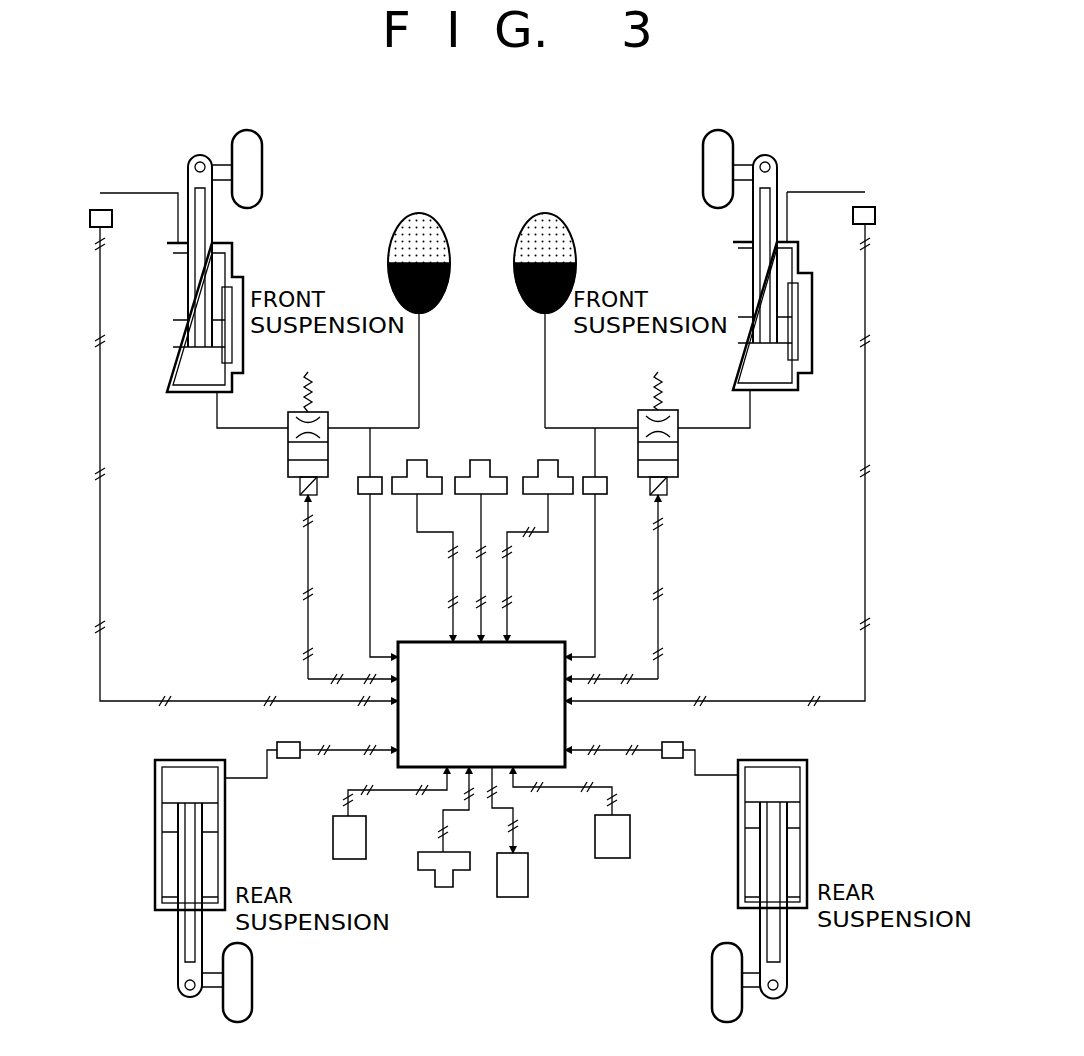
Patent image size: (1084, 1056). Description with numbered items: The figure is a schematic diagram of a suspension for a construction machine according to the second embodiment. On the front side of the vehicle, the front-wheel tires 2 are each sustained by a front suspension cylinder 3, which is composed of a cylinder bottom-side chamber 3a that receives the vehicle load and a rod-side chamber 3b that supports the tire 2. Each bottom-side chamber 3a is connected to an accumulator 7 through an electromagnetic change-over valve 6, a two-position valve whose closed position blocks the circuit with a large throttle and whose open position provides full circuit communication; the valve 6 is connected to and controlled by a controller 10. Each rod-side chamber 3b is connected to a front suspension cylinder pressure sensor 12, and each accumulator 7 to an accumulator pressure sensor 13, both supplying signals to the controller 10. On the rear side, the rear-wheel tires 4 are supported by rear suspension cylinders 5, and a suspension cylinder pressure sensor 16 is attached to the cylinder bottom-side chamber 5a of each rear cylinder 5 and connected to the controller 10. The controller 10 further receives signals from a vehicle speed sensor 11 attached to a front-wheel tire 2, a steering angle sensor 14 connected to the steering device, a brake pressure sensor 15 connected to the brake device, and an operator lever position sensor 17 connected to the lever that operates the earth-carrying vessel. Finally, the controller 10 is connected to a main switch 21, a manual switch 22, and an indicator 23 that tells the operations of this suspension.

The front-wheel tire 2 is at (247, 137).
The front suspension cylinder 3 is at (233, 257).
The cylinder bottom-side chamber 3a is at (193, 375).
The rod-side chamber 3b is at (180, 272).
The rear-wheel tire 4 is at (252, 983).
The rear suspension cylinder 5 is at (225, 858).
The cylinder bottom-side chamber 5a is at (170, 787).
The electromagnetic change-over valve 6 is at (298, 483).
The accumulator 7 is at (418, 214).
The controller 10 is at (538, 640).
The vehicle speed sensor 11 is at (497, 477).
The front suspension cylinder pressure sensor 12 is at (98, 208).
The accumulator pressure sensor 13 is at (378, 497).
The steering angle sensor 14 is at (437, 477).
The brake pressure sensor 15 is at (558, 497).
The suspension cylinder pressure sensor 16 is at (277, 745).
The operator lever position sensor 17 is at (428, 872).
The main switch 21 is at (630, 835).
The manual switch 22 is at (333, 837).
The indicator 23 is at (513, 897).